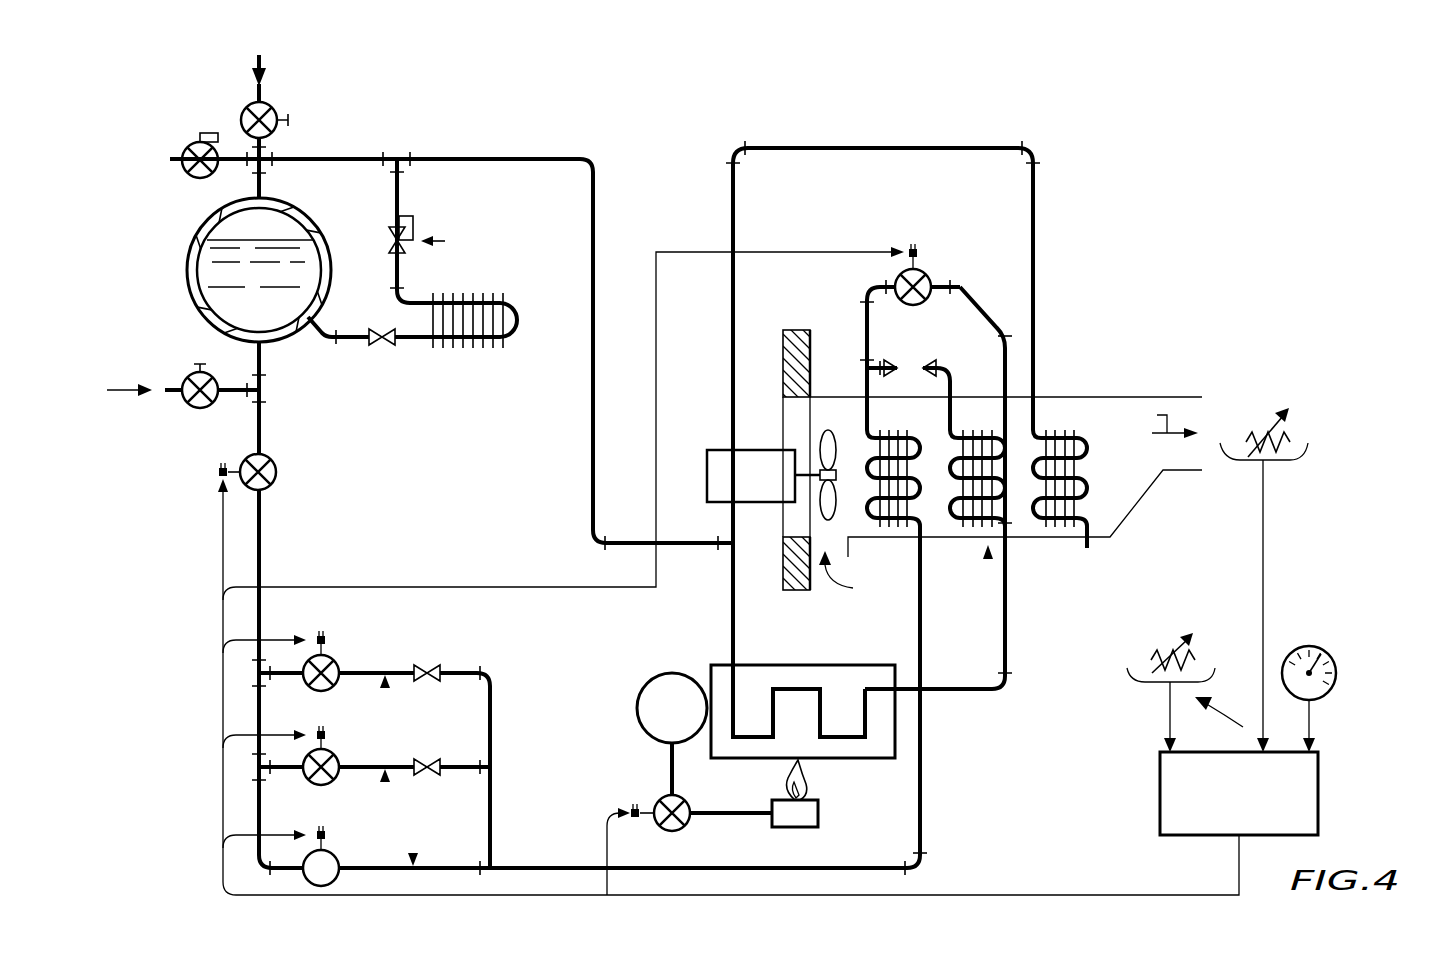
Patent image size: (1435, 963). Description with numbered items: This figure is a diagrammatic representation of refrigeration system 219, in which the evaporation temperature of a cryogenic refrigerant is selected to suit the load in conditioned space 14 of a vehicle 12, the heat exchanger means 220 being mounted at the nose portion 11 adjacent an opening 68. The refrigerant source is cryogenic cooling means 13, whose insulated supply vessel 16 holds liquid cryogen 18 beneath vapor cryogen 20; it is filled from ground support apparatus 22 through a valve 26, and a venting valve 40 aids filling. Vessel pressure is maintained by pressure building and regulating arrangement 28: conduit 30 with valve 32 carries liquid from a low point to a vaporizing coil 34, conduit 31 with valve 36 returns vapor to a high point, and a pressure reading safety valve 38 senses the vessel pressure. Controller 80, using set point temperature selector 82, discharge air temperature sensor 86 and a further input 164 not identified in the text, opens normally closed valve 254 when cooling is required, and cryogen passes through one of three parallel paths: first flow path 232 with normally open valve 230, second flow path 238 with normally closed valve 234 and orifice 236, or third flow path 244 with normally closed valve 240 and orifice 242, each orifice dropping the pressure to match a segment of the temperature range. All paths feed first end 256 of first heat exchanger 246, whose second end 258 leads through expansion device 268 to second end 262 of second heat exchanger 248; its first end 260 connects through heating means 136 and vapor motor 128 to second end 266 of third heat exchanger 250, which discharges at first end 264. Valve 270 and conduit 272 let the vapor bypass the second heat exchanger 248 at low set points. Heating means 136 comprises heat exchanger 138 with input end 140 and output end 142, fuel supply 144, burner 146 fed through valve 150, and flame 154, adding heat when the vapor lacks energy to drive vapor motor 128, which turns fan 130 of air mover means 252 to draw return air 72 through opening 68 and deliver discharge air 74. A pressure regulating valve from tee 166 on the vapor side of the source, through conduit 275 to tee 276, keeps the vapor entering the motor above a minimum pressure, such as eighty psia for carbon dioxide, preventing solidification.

The nose portion 11 is at (792, 592).
The vehicle 12 is at (744, 612).
The cryogenic cooling means 13 is at (247, 254).
The conditioned space 14 is at (1159, 522).
The supply vessel 16 is at (190, 290).
The liquid cryogen 18 is at (283, 240).
The vapor cryogen 20 is at (236, 225).
The ground support apparatus 22 is at (117, 388).
The valve 26 is at (188, 379).
The pressure building and regulating arrangement 28 is at (455, 276).
The conduit 30 is at (320, 326).
The conduit 31 is at (298, 152).
The valve 32 is at (376, 346).
The vaporizing coil 34 is at (492, 348).
The valve 36 is at (392, 247).
The pressure reading safety valve 38 is at (192, 146).
The venting valve 40 is at (276, 107).
The opening 68 is at (782, 553).
The return air 72 is at (1031, 639).
The discharge air 74 is at (1162, 418).
The controller 80 is at (1160, 772).
The set point temperature selector 82 is at (1336, 675).
The discharge air temperature sensor 86 is at (1292, 440).
The vapor motor 128 is at (755, 448).
The fan 130 is at (828, 436).
The heating means 136 is at (870, 792).
The heat exchanger 138 is at (820, 688).
The input end 140 is at (900, 688).
The output end 142 is at (733, 662).
The fuel supply 144 is at (637, 706).
The burner 146 is at (820, 813).
The valve 150 is at (684, 801).
The flame 154 is at (806, 780).
The temperature sensor 164 is at (1150, 658).
The tee 166 is at (395, 155).
The refrigeration system 219 is at (585, 124).
The heat exchanger means 220 is at (988, 559).
The normally open valve 230 is at (337, 861).
The first flow path 232 is at (413, 853).
The normally closed valve 234 is at (338, 760).
The expansion device 236 is at (436, 762).
The second flow path 238 is at (385, 782).
The normally closed valve 240 is at (338, 666).
The expansion device 242 is at (436, 668).
The third flow path 244 is at (385, 688).
The first heat exchanger 246 is at (898, 426).
The second heat exchanger 248 is at (937, 576).
The third heat exchanger 250 is at (1088, 490).
The air mover means 252 is at (737, 536).
The normally closed valve 254 is at (272, 461).
The first end 256 is at (918, 543).
The second end 258 is at (864, 365).
The first end 260 is at (1009, 545).
The second end 262 is at (952, 393).
The first end 264 is at (1089, 550).
The second end 266 is at (1040, 395).
The expansion device 268 is at (914, 362).
The valve 270 is at (928, 279).
The conduit 272 is at (988, 322).
The conduit 275 is at (596, 240).
The tee 276 is at (722, 552).